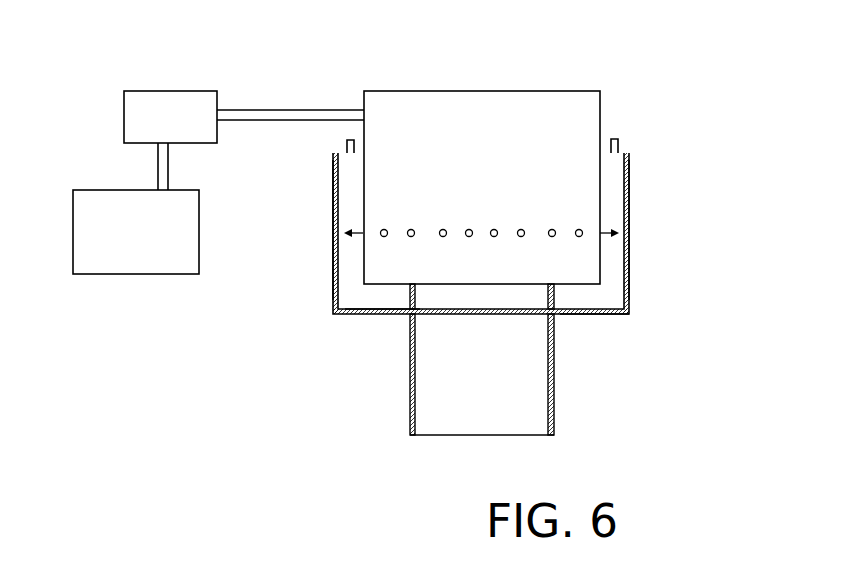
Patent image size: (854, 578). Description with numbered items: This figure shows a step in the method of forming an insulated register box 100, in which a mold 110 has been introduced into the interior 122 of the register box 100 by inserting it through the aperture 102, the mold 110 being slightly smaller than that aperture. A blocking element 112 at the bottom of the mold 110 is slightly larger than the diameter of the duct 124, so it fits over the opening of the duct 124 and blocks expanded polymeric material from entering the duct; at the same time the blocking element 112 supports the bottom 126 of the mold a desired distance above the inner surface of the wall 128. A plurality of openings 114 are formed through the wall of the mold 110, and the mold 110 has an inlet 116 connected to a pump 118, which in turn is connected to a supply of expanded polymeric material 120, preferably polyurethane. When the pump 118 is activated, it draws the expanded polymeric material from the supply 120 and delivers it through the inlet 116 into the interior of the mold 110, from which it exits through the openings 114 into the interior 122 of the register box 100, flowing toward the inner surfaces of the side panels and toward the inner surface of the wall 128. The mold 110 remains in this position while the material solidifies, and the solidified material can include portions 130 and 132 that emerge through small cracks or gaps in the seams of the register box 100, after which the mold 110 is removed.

The register box 100 is at (630, 234).
The aperture 102 is at (612, 139).
The mold 110 is at (596, 91).
The blocking element 112 is at (533, 298).
The openings 114 is at (412, 226).
The inlet 116 is at (277, 108).
The pump 118 is at (124, 120).
The supply of expanded polymeric material 120 is at (117, 277).
The interior 122 is at (614, 199).
The duct 124 is at (410, 413).
The bottom 126 is at (394, 290).
The wall 128 is at (603, 314).
The portion of solidified expanded polymeric material 130 is at (637, 272).
The portion of solidified expanded polymeric material 132 is at (327, 272).